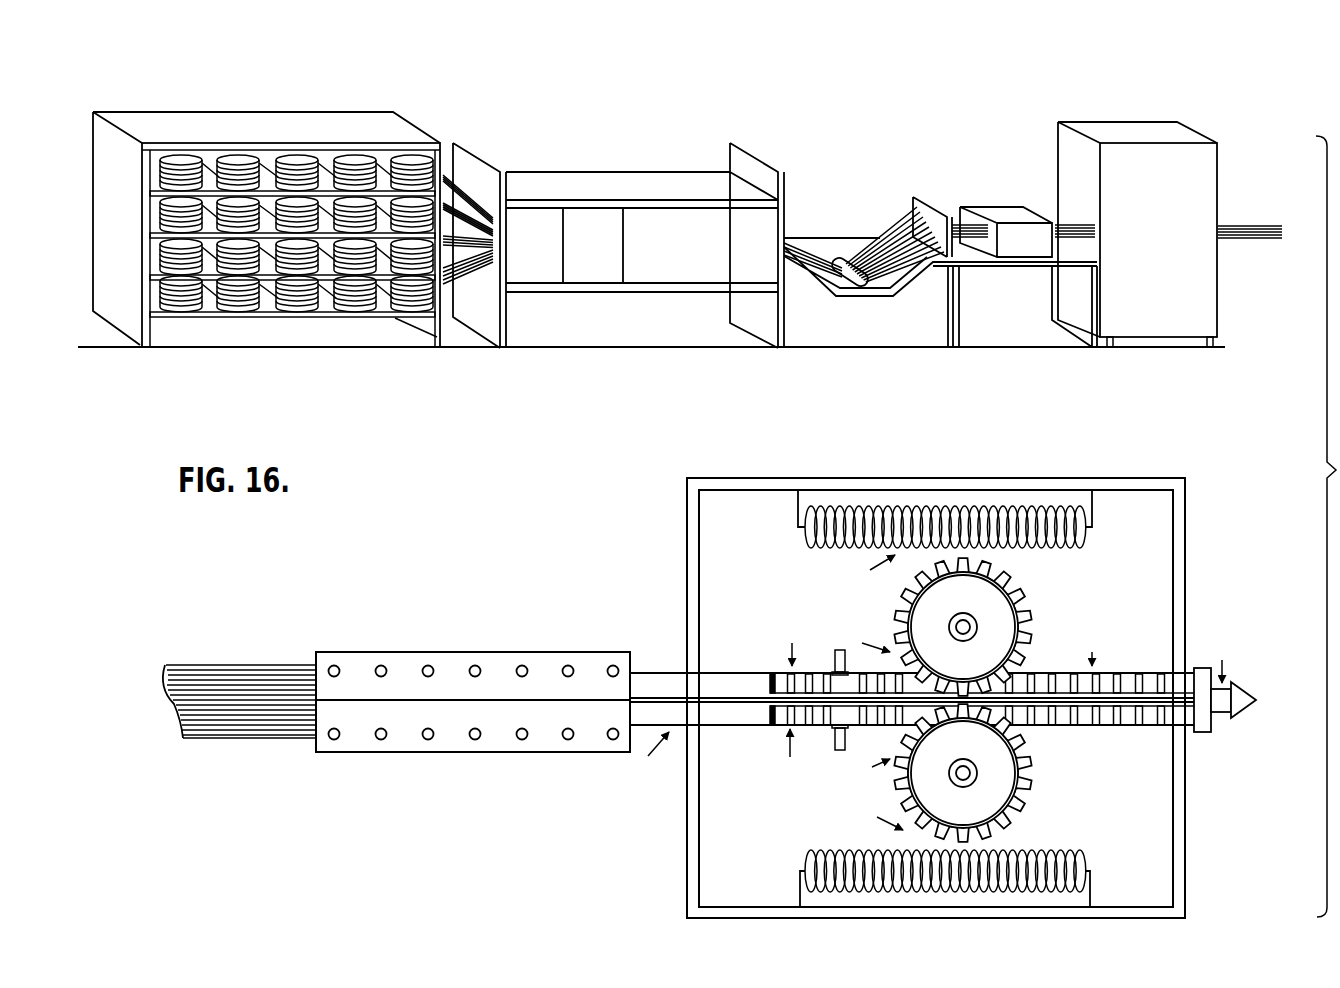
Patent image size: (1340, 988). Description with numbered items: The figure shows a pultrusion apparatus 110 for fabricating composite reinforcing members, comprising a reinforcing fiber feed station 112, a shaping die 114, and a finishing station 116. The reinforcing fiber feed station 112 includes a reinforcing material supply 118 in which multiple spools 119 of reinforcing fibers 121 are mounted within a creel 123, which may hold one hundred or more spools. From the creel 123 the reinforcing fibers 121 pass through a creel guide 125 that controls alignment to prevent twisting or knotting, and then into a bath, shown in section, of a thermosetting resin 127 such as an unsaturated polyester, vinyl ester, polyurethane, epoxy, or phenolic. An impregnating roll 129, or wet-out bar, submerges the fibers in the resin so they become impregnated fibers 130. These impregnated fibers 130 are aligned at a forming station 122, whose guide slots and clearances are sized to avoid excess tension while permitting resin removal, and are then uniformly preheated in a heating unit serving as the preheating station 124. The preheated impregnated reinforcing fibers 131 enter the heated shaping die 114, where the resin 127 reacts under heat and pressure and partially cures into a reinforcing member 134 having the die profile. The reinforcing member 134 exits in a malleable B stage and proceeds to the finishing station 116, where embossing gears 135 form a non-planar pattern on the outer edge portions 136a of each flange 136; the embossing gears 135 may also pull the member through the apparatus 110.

The apparatus 110 is at (617, 105).
The reinforcing fiber feed station 112 is at (852, 146).
The shaping die 114 is at (501, 549).
The finishing station 116 is at (1127, 466).
The reinforcing material supply 118 is at (259, 88).
The spools 119 is at (358, 163).
The reinforcing fibers 121 is at (435, 160).
The forming station 122 is at (1014, 213).
The creel 123 is at (438, 136).
The preheating station 124 is at (1137, 124).
The creel guide 125 is at (563, 180).
The thermosetting resin 127 is at (826, 247).
The impregnating roll 129 is at (868, 288).
The impregnated fibers 130 is at (973, 228).
The preheated impregnated reinforcing fibers 131 is at (1232, 226).
The reinforcing member 134 is at (663, 672).
The embossing gears 135 is at (1008, 580).
The flange 136 is at (1027, 690).
The outer edge portions 136a is at (1106, 684).